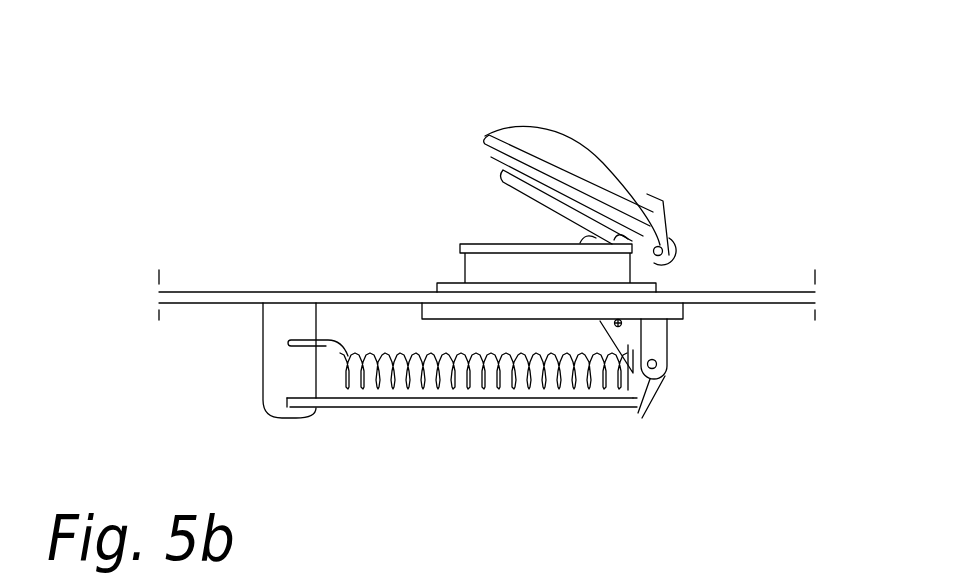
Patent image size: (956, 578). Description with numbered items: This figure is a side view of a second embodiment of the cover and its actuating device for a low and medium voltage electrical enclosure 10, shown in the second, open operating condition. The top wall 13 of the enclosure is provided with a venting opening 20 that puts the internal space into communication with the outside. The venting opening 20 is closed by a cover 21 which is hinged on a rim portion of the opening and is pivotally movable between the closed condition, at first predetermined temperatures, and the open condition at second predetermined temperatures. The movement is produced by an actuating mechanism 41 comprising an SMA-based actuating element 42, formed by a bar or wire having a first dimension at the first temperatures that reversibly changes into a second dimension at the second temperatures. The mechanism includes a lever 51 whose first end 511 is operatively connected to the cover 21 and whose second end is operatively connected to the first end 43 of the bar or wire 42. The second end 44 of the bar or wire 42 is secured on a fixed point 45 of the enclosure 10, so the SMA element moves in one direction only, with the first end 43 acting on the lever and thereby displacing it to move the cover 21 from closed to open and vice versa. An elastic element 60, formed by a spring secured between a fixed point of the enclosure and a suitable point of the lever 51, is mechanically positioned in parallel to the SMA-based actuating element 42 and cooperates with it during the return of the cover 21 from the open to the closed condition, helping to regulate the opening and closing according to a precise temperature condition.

The low and medium voltage electrical enclosure 10 is at (745, 354).
The top wall 13 is at (200, 293).
The venting opening 20 is at (484, 231).
The cover 21 is at (566, 133).
The actuating mechanism 41 is at (678, 400).
The SMA-based actuating element 42 is at (520, 401).
The first end of the bar or wire 43 is at (636, 401).
The second end of the bar or wire 44 is at (291, 406).
The fixed point 45 is at (268, 374).
The lever 51 is at (634, 338).
The elastic element 60 is at (433, 367).
The first end of the lever 511 is at (598, 237).